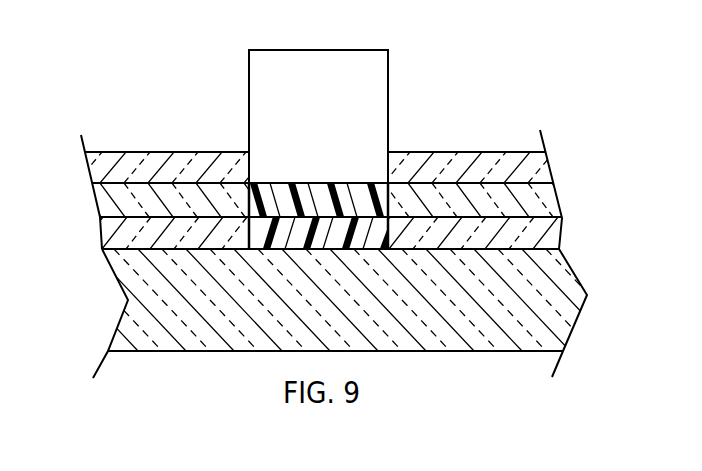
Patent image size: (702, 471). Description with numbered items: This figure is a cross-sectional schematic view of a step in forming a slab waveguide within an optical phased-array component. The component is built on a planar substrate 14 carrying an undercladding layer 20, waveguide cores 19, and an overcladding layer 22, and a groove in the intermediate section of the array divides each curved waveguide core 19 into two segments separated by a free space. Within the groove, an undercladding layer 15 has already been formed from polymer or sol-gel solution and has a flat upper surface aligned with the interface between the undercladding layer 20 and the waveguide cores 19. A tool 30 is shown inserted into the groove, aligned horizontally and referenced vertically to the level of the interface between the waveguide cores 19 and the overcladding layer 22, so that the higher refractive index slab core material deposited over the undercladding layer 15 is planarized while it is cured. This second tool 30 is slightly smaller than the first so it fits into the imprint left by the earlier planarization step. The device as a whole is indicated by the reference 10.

The semiconductor device structure 10 is at (519, 118).
The planar substrate 14 is at (565, 286).
The undercladding layer 15 is at (280, 233).
The waveguide cores 19 is at (117, 203).
The undercladding layer 20 is at (117, 229).
The overcladding layer 22 is at (108, 164).
The tool 30 is at (353, 62).